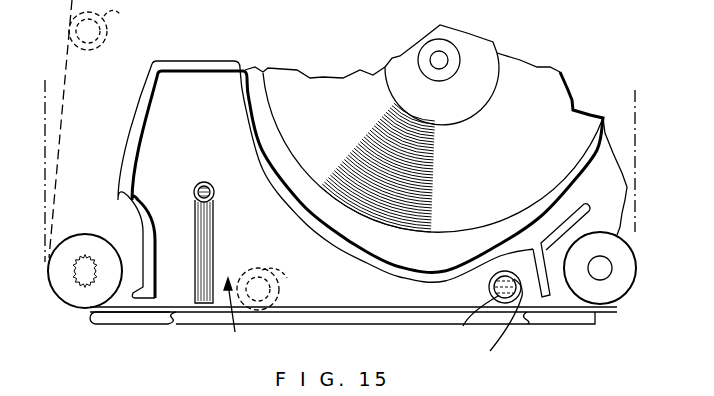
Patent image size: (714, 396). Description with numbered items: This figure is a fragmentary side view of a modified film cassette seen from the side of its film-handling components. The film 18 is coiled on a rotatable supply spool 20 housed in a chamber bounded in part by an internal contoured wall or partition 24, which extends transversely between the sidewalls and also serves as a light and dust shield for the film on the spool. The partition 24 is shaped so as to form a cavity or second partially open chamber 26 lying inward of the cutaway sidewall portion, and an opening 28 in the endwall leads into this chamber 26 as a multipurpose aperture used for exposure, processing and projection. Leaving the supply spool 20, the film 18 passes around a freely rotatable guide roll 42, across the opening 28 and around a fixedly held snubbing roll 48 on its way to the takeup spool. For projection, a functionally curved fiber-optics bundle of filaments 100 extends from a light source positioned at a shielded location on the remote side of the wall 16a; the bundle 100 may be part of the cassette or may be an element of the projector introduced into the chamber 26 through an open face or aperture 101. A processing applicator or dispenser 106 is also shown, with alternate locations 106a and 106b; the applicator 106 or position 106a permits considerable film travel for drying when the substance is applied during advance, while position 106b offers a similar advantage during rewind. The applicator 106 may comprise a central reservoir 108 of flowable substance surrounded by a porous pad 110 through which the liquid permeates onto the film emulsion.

The wall 16a is at (262, 232).
The film 18 is at (520, 131).
The supply spool 20 is at (494, 70).
The internal contoured wall or partition 24 is at (303, 213).
The cavity or second partially open chamber 26 is at (236, 316).
The opening 28 is at (172, 325).
The guide roll 42 is at (625, 277).
The snubbing roll 48 is at (67, 290).
The fiber-optics bundle of filaments 100 is at (195, 215).
The aperture 101 is at (198, 185).
The applicator or dispenser 106 is at (489, 288).
The applicator position 106a is at (332, 285).
The applicator position 106b is at (165, 30).
The central reservoir 108 is at (470, 320).
The porous pad 110 is at (499, 325).